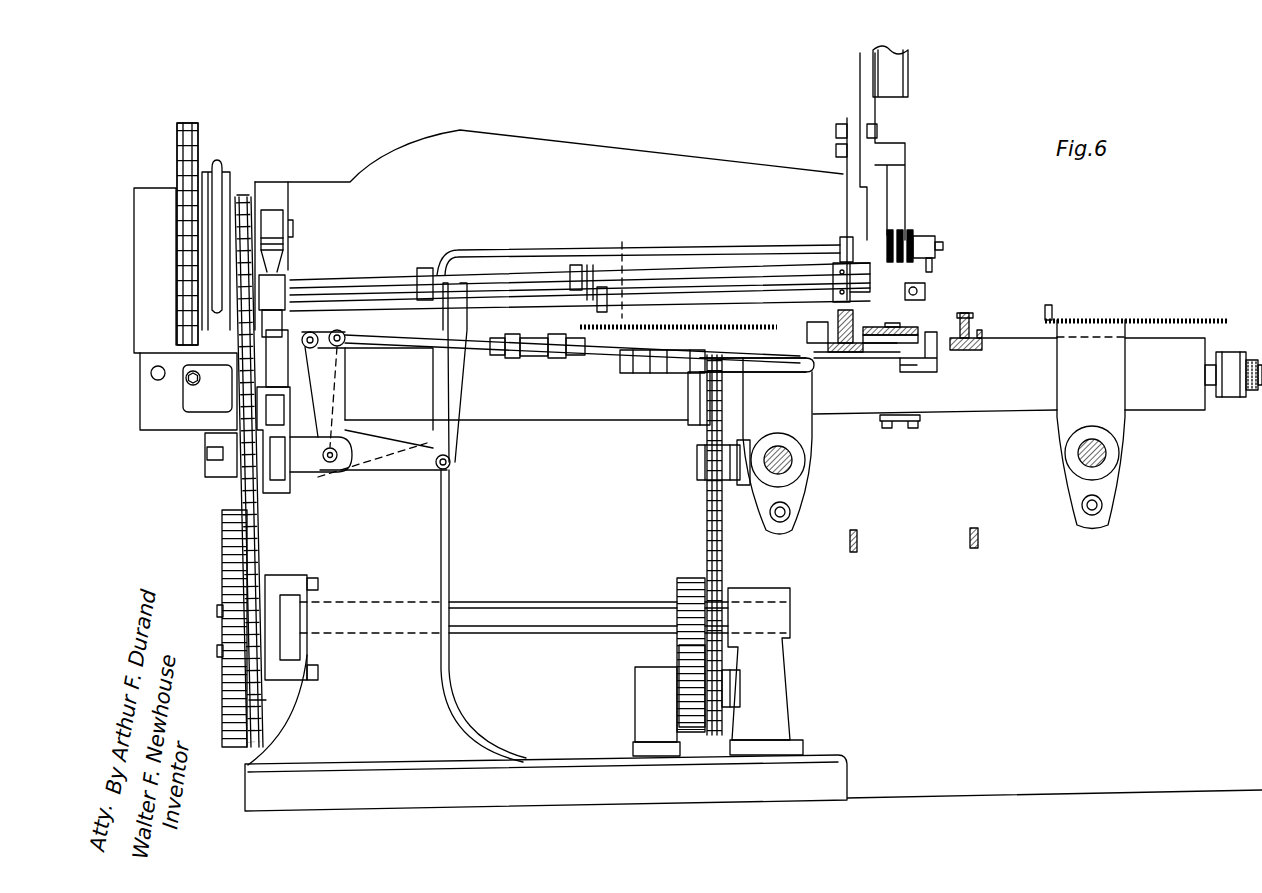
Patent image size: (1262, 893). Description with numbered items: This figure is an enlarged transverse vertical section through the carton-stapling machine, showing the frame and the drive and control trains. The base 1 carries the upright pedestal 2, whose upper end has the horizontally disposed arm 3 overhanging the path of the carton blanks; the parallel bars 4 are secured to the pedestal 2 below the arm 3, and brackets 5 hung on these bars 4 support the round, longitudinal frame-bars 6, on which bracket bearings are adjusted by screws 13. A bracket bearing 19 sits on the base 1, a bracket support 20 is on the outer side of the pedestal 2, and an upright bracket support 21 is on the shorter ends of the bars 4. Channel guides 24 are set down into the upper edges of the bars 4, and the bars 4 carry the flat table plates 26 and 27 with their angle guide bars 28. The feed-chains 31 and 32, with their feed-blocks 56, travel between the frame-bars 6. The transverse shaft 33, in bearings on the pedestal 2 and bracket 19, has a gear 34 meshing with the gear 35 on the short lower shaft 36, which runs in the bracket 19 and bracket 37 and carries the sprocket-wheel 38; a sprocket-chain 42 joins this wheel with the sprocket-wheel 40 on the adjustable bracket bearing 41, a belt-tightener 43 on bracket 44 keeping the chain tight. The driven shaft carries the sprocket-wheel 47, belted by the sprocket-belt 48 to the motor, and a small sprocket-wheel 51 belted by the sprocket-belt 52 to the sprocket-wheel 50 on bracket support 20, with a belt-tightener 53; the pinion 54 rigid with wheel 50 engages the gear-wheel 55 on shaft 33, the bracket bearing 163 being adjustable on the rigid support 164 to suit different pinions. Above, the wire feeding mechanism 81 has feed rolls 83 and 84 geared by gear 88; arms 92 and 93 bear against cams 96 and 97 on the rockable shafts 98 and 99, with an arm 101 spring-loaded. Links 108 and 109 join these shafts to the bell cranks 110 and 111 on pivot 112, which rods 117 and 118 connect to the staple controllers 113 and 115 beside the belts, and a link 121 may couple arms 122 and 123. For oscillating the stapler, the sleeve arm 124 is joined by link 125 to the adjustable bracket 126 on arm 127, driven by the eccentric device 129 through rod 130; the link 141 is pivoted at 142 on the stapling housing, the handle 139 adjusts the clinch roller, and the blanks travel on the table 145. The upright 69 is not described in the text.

The base 1 is at (578, 758).
The upright pedestal 2 is at (432, 556).
The arm 3 is at (667, 167).
The parallel bars 4 is at (150, 402).
The brackets 5 is at (797, 413).
The round frame-bars 6 is at (790, 468).
The screws 13 is at (783, 513).
The bracket bearing 19 is at (572, 242).
The bracket support 20 is at (300, 605).
The upright bracket support 21 is at (143, 274).
The channel guides 24 is at (822, 352).
The flat table plate 26 is at (732, 327).
The flat table plate 27 is at (1125, 318).
The angle guide bars 28 is at (781, 322).
The feed-chain 31 is at (845, 353).
The feed-chain 32 is at (963, 352).
The shaft 33 is at (560, 612).
The gear 34 is at (680, 580).
The gear 35 is at (688, 690).
The short lower shaft 36 is at (740, 690).
The bracket 37 is at (646, 700).
The sprocket-wheel 38 is at (740, 661).
The sprocket-wheel 40 is at (700, 474).
The adjustable bracket bearing 41 is at (748, 485).
The sprocket-chain 42 is at (707, 513).
The belt-tightener 43 is at (700, 425).
The bracket 44 is at (700, 395).
The sprocket-wheel 47 is at (190, 132).
The sprocket-belt 48 is at (178, 150).
The sprocket-wheel 50 is at (262, 700).
The small sprocket-wheel 51 is at (245, 198).
The sprocket-belt 52 is at (240, 507).
The belt-tightener 53 is at (223, 403).
The pinion 54 is at (233, 622).
The gear-wheel 55 is at (232, 554).
The feed-blocks 56 is at (838, 316).
The standard 69 is at (889, 199).
The wire feeding mechanism 81 is at (903, 226).
The feed roll 83 is at (888, 240).
The feed roll 84 is at (917, 232).
The gear 88 is at (920, 248).
The arm 92 is at (878, 254).
The arm 93 is at (925, 280).
The cam 96 is at (860, 267).
The cam 97 is at (925, 295).
The shaft 98 is at (385, 275).
The shaft 99 is at (343, 300).
The arm 101 is at (932, 266).
The link 108 is at (440, 366).
The link 109 is at (447, 365).
The bell crank 110 is at (398, 437).
The bell crank 111 is at (405, 463).
The pivot 112 is at (332, 463).
The staple controller 113 is at (810, 368).
The staple controller 115 is at (930, 372).
The rod 117 is at (607, 358).
The rod 118 is at (611, 362).
The link 121 is at (588, 265).
The arm 122 is at (575, 265).
The arm 123 is at (600, 312).
The arm 124 is at (273, 212).
The link 125 is at (280, 285).
The adjustable bracket 126 is at (290, 428).
The arm 127 is at (278, 475).
The eccentric device 129 is at (224, 170).
The rod 130 is at (213, 430).
The rotary screw-threaded handle 139 is at (1232, 365).
The link 141 is at (840, 152).
The pivot 142 is at (838, 130).
The table 145 is at (897, 372).
The bracket bearing 163 is at (271, 583).
The rigid support 164 is at (298, 650).